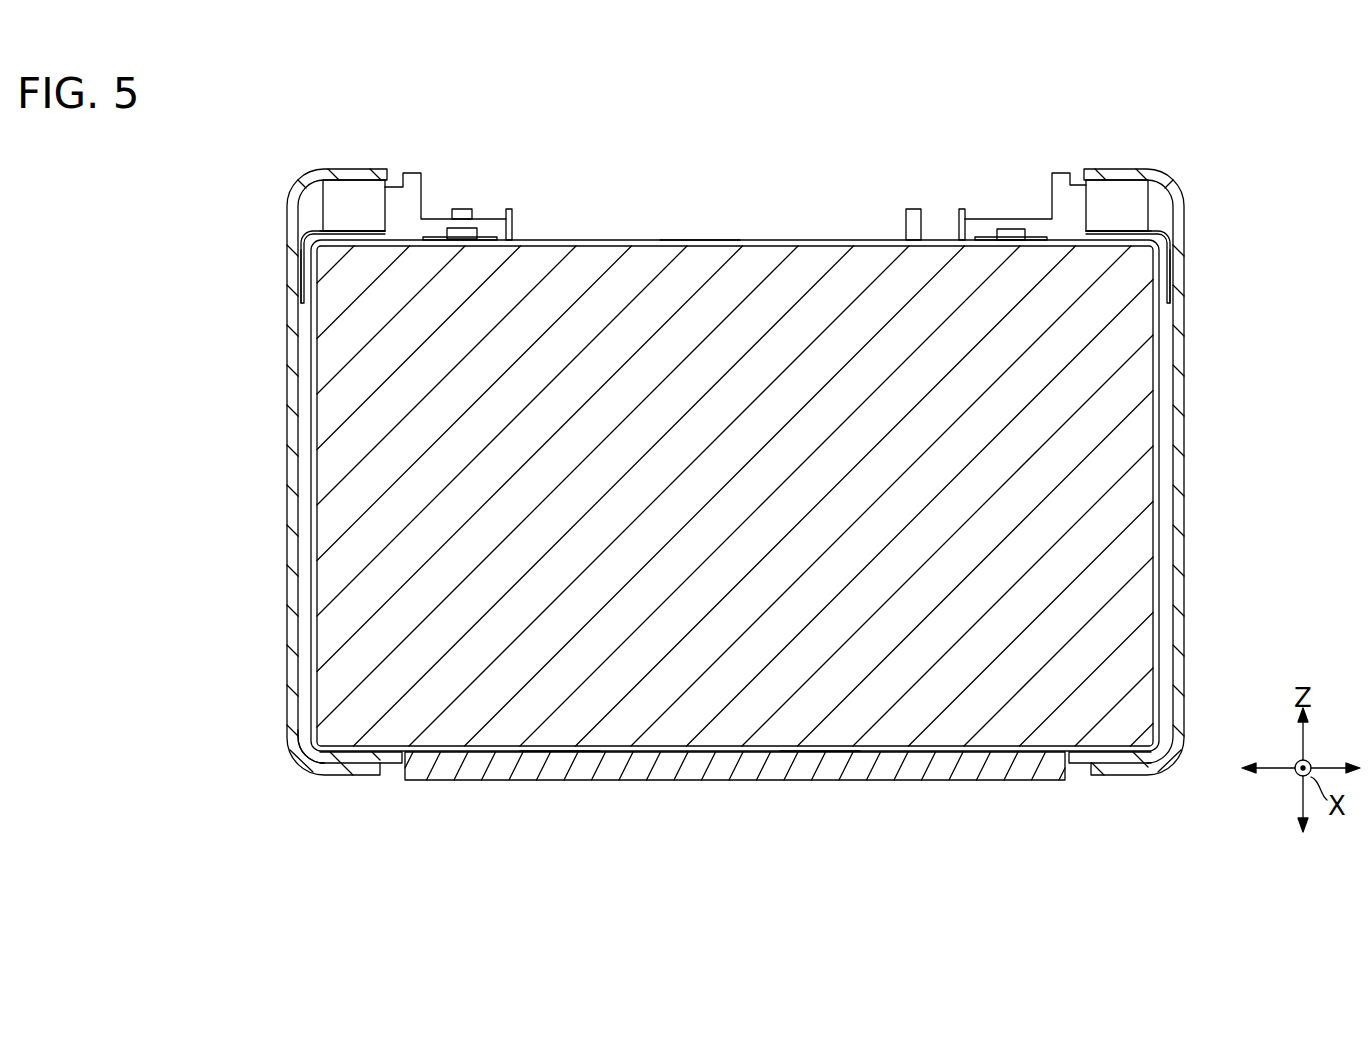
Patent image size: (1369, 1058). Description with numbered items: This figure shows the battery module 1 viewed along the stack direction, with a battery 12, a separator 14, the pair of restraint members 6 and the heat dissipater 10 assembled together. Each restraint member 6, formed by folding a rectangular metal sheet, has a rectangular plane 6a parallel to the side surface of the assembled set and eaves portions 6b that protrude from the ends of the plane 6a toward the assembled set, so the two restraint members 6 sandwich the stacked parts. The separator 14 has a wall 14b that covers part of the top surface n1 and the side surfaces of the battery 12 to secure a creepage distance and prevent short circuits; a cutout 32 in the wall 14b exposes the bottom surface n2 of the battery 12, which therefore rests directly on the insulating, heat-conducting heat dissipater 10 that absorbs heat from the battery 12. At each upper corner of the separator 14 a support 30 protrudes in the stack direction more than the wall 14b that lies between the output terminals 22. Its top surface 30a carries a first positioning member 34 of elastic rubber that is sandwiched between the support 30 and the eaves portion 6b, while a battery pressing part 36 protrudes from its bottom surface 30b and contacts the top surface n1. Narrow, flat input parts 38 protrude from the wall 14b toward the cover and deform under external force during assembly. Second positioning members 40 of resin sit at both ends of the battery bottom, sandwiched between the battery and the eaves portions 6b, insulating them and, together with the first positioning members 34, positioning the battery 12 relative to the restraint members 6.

The battery module 1 is at (750, 872).
The restraint member 6 is at (287, 440).
The plane 6a is at (289, 630).
The eaves portion 6b is at (347, 169).
The heat dissipater 10 is at (947, 780).
The battery 12 is at (818, 754).
The separator 14 is at (735, 500).
The wall 14b is at (790, 240).
The output terminal 22 is at (472, 230).
The support 30 is at (303, 238).
The top surface 30a is at (343, 228).
The bottom surface 30b is at (360, 244).
The cutout 32 is at (318, 753).
The first positioning member 34 is at (323, 200).
The battery pressing part 36 is at (398, 245).
The input part 38 is at (458, 209).
The second positioning member 40 is at (390, 772).
The top surface n1 is at (700, 240).
The bottom surface n2 is at (555, 752).